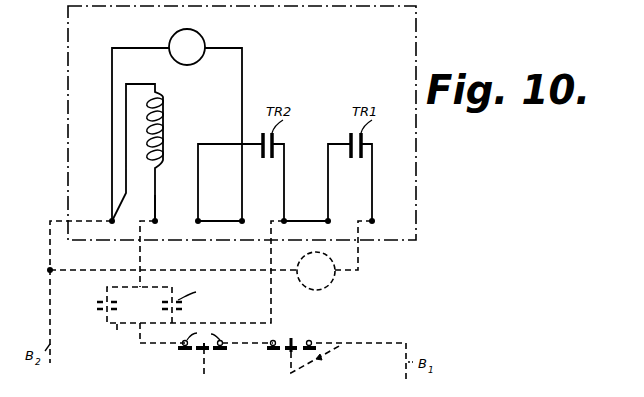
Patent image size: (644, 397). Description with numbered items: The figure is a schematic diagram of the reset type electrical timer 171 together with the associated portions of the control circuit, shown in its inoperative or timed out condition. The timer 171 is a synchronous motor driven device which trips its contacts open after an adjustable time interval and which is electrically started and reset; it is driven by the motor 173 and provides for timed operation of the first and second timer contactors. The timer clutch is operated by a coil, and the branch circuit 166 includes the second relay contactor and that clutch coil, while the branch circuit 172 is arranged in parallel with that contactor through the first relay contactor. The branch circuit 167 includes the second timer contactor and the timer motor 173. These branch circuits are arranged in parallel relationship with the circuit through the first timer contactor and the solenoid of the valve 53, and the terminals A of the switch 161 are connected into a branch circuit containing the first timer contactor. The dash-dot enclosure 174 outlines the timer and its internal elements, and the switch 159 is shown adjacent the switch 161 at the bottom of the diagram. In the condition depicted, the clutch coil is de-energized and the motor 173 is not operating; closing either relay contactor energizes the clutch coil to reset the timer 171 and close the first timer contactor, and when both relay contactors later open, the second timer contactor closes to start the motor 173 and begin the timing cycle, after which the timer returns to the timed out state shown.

The valve 53 is at (328, 286).
The switch 159 is at (278, 352).
The switch 161 is at (203, 370).
The branch circuit 166 is at (156, 191).
The branch circuit 167 is at (243, 57).
The reset type electrical timer 171 is at (160, 97).
The branch circuit 172 is at (117, 327).
The motor 173 is at (206, 40).
The enclosure 174 is at (418, 42).